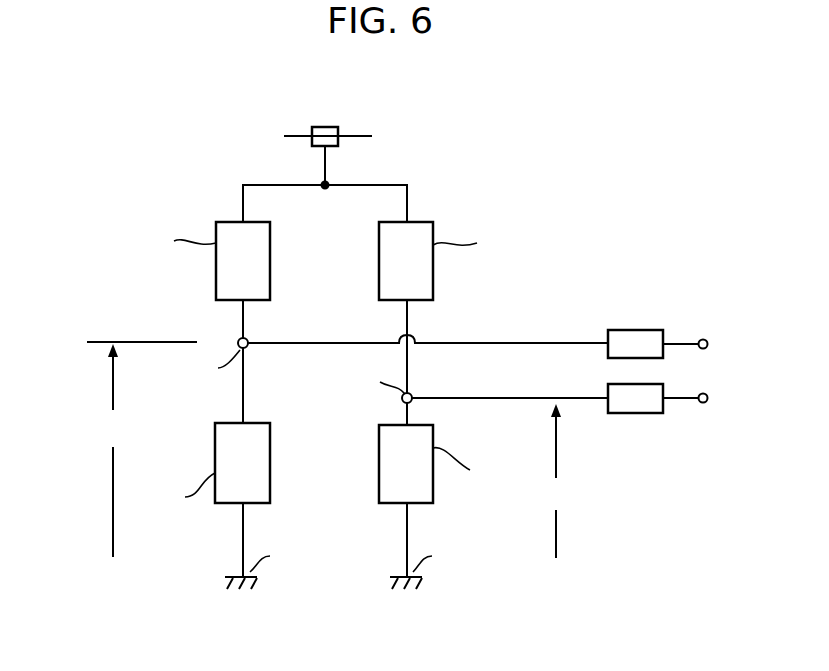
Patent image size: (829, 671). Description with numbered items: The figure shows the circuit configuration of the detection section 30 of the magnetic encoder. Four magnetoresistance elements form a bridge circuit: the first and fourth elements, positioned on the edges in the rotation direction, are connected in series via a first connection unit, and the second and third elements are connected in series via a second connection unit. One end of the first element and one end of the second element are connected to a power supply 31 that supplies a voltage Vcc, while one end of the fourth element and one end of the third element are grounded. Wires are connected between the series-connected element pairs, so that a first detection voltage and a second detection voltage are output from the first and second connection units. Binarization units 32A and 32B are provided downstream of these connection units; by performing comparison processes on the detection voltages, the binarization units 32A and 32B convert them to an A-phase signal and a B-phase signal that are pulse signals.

The detection section 30 is at (163, 121).
The power supply 31 is at (318, 127).
The binarization unit 32A is at (628, 330).
The binarization unit 32B is at (633, 413).